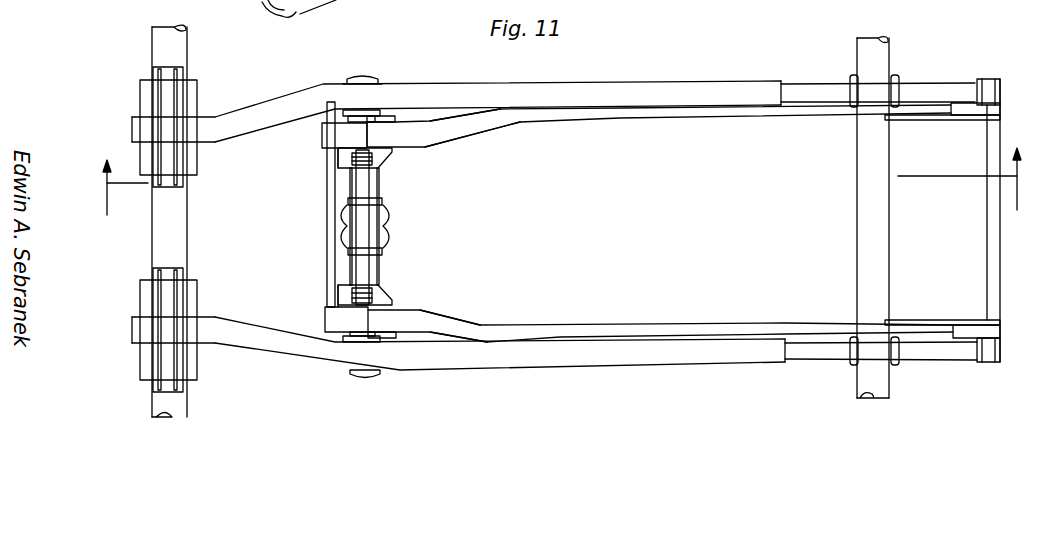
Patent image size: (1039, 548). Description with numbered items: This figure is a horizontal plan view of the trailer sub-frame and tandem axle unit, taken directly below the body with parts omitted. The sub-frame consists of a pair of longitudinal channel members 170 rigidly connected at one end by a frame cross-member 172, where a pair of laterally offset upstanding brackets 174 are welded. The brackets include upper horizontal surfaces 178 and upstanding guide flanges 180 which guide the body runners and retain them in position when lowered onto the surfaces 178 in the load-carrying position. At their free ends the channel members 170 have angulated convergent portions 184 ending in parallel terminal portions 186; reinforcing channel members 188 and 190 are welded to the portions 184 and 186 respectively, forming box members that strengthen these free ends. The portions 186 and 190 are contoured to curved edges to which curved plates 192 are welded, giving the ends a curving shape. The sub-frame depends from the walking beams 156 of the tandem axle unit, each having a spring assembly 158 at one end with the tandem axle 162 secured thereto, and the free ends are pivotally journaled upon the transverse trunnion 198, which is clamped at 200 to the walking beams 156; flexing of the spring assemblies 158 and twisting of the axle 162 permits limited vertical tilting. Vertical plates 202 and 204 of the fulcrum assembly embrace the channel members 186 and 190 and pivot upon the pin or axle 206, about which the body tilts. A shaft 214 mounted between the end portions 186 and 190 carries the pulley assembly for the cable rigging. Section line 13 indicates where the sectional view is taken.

The section line 13- 13 is at (555, 181).
The walking beams 156 is at (628, 90).
The spring assembly 158 is at (808, 86).
The tandem axle 162 is at (866, 208).
The longitudinal channel members 170 is at (825, 115).
The frame cross-member 172 is at (990, 195).
The upstanding brackets 174 is at (991, 107).
The upper horizontal surfaces 178 is at (972, 107).
The upstanding guide flanges 180 is at (982, 118).
The angulated convergent portions 184 is at (447, 122).
The parallel terminal portions 186 is at (399, 116).
The reinforcing channel member 188 is at (465, 133).
The reinforcing channel member 190 is at (402, 142).
The curved plates 192 is at (334, 136).
The transverse axle or trunnion 198 is at (373, 192).
The clamp 200 is at (360, 76).
The vertical plate 202 is at (356, 110).
The vertical plate 204 is at (340, 155).
The pin or axle 206 is at (333, 232).
The shaft 214 is at (372, 232).